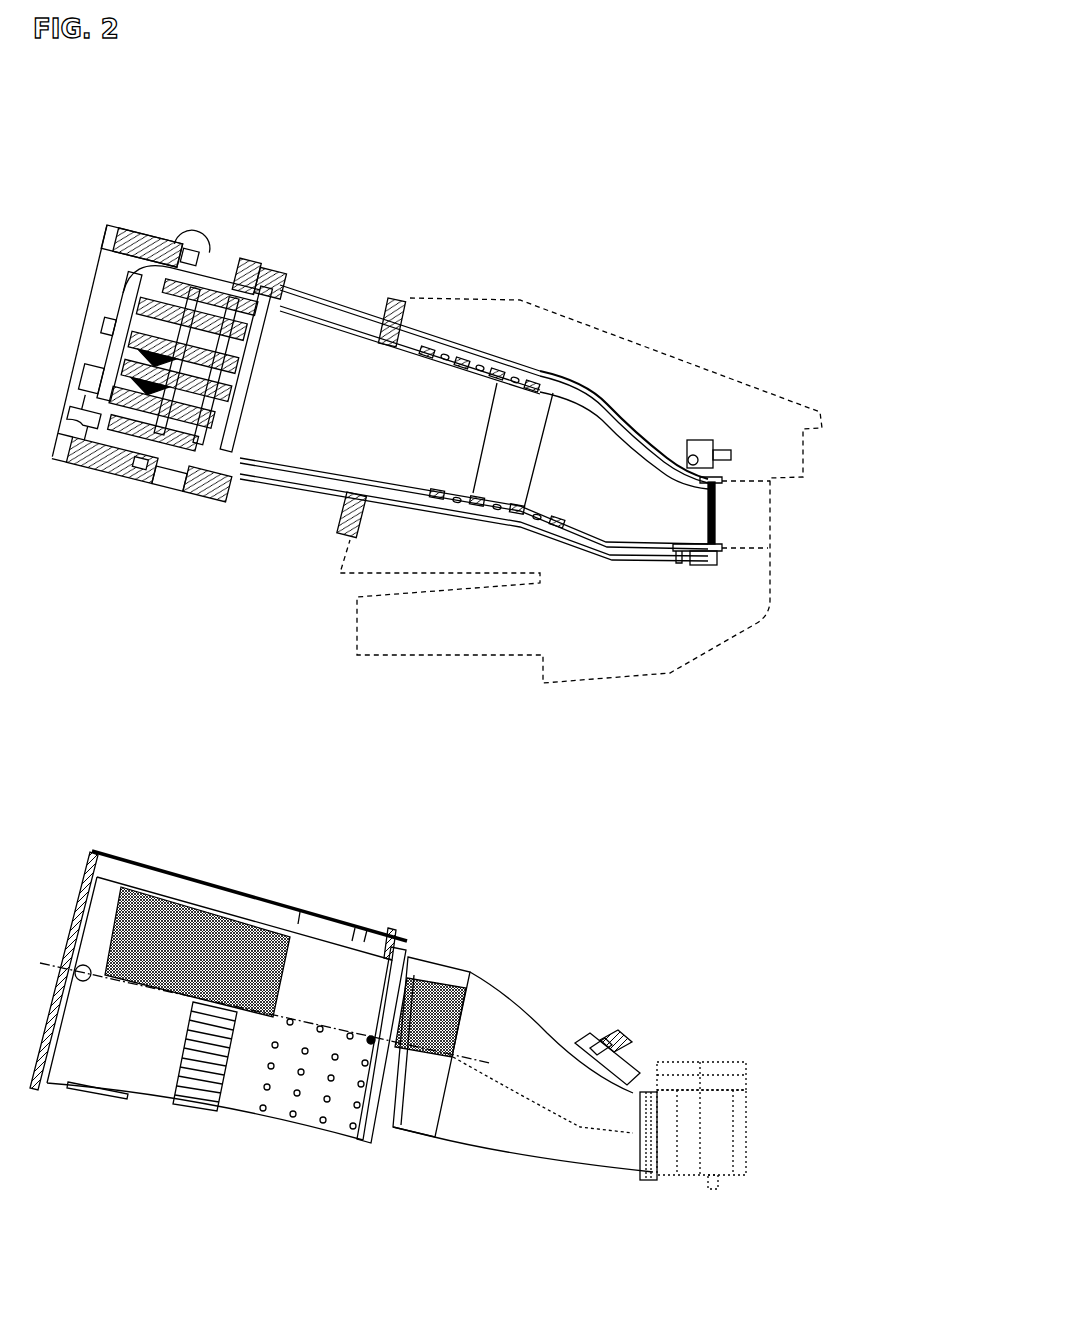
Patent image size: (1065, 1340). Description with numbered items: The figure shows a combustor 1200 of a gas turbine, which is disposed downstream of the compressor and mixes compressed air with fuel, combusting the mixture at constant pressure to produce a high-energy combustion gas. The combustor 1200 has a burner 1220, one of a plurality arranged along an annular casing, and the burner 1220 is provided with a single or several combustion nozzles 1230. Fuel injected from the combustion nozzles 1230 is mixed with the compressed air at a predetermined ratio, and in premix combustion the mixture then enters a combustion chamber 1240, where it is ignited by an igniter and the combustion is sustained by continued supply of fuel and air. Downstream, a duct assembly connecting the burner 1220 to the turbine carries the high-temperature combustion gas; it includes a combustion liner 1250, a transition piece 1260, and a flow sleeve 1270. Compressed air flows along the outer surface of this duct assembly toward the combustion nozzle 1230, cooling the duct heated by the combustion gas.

The combustor 1200 is at (198, 176).
The burner 1220 is at (94, 327).
The combustion nozzle 1230 is at (130, 432).
The combustion chamber 1240 is at (283, 450).
The combustion liner 1250 is at (353, 313).
The transition piece 1260 is at (235, 254).
The flow sleeve 1270 is at (555, 361).